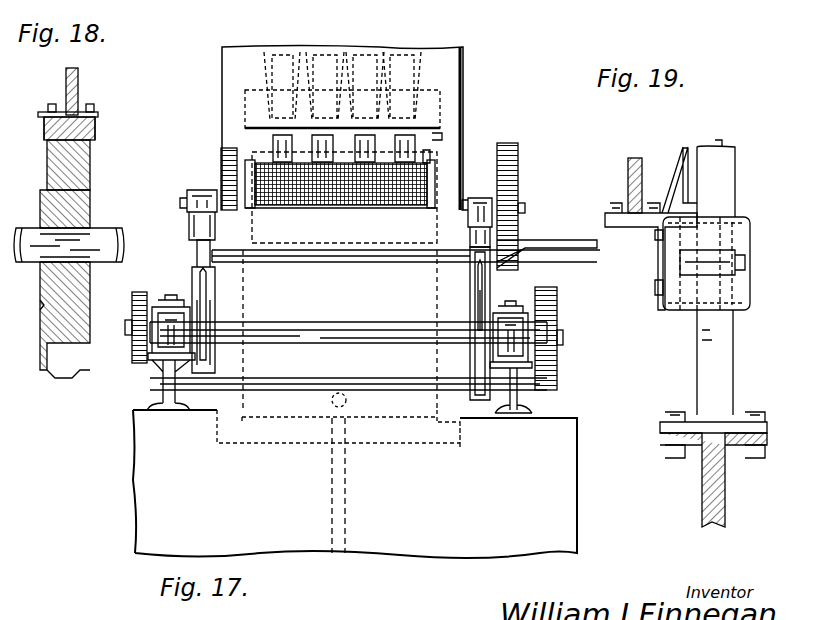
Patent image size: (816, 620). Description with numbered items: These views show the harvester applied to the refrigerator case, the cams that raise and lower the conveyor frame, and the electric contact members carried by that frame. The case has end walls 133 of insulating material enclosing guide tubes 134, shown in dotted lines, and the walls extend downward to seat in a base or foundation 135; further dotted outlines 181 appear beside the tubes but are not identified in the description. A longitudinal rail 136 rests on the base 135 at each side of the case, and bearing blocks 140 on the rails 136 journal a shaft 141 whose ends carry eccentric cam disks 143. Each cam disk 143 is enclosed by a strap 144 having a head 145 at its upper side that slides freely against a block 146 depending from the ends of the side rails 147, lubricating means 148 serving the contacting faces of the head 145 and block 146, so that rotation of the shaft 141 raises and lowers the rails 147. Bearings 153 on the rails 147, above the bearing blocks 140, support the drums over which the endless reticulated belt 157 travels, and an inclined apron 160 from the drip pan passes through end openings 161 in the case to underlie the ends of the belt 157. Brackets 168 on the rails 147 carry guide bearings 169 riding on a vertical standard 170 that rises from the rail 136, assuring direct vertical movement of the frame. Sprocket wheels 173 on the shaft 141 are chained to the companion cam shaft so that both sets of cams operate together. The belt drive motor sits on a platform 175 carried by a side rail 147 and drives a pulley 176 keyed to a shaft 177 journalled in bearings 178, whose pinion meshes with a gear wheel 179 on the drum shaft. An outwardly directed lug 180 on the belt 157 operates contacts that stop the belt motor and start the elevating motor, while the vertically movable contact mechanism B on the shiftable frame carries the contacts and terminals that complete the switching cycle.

In FIG. 17, the end walls 133 is at (437, 62).
In FIG. 17, the guide tubes 134 is at (306, 58).
In FIG. 17, the base 135 is at (570, 420).
In FIG. 17, the longitudinal rail 136 is at (163, 400).
In FIG. 19, the longitudinal rail 136 is at (708, 491).
In FIG. 17, the bearing blocks 140 is at (172, 307).
In FIG. 18, the shaft 141 is at (108, 232).
In FIG. 17, the shaft 141 is at (305, 322).
In FIG. 18, the eccentric cam disk 143 is at (48, 312).
In FIG. 18, the strap 144 is at (52, 375).
In FIG. 18, the head 145 is at (90, 152).
In FIG. 18, the block 146 is at (96, 124).
In FIG. 18, the side rails 147 is at (66, 86).
In FIG. 19, the side rails 147 is at (628, 182).
In FIG. 18, the lubricating means 148 is at (78, 110).
In FIG. 17, the bearings 153 is at (190, 218).
In FIG. 17, the endless belt 157 is at (318, 185).
In FIG. 17, the apron 160 is at (341, 221).
In FIG. 17, the end openings 161 is at (428, 157).
In FIG. 19, the brackets 168 is at (645, 232).
In FIG. 19, the guide bearings 169 is at (742, 251).
In FIG. 19, the vertical standard 170 is at (733, 341).
In FIG. 17, the sprocket wheels 173 is at (137, 358).
In FIG. 17, the platform 175 is at (548, 240).
In FIG. 17, the pulley 176 is at (518, 149).
In FIG. 17, the shaft 177 is at (522, 204).
In FIG. 17, the bearings 178 is at (548, 327).
In FIG. 17, the gear wheel 179 is at (221, 162).
In FIG. 17, the lug 180 is at (444, 140).
In FIG. 17, the bottle 181 is at (262, 56).
In FIG. 19, the contact mechanism B is at (674, 162).